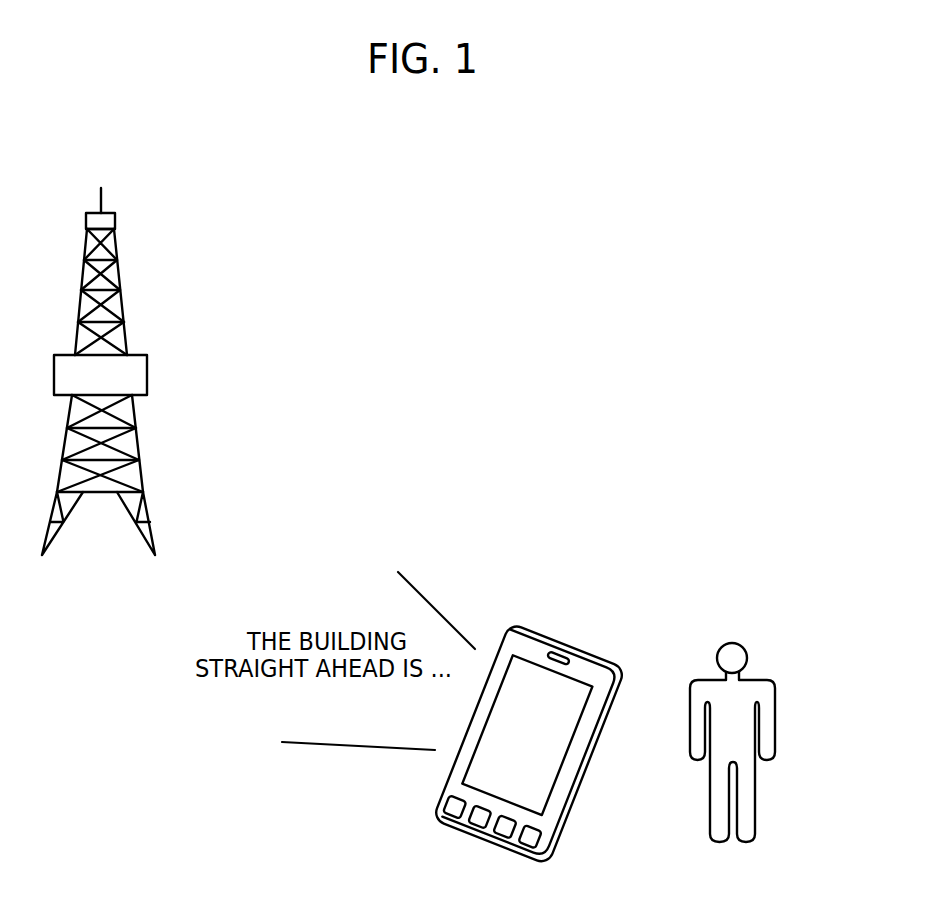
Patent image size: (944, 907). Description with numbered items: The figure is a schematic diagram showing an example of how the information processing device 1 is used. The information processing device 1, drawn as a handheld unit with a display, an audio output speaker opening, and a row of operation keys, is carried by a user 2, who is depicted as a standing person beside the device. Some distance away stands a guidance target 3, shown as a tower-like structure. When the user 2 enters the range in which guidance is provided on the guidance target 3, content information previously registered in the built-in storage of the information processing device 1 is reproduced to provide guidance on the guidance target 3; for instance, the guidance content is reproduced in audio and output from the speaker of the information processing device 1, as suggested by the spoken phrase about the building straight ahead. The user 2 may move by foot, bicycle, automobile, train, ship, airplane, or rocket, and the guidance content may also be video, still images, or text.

The information processing device 1 is at (628, 678).
The user 2 is at (742, 645).
The guidance target 3 is at (117, 272).